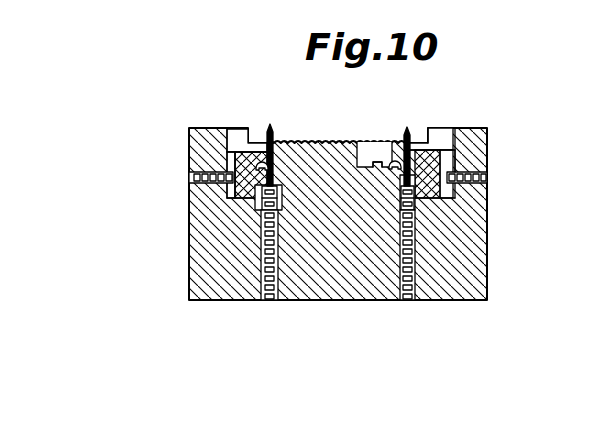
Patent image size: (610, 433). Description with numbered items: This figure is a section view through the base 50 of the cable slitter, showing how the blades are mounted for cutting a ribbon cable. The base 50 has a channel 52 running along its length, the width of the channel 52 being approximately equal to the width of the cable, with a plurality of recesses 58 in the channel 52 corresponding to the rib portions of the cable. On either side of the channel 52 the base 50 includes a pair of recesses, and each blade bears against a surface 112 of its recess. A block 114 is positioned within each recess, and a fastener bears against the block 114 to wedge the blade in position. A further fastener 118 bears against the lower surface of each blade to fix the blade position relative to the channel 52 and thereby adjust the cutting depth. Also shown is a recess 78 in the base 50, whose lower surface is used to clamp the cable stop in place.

The base 50 is at (488, 255).
The surface 112 is at (270, 155).
The recess 58 is at (346, 143).
The recess 78 is at (376, 171).
The fastener 118 is at (263, 248).
The channel 52 is at (420, 137).
The block 114 is at (447, 162).